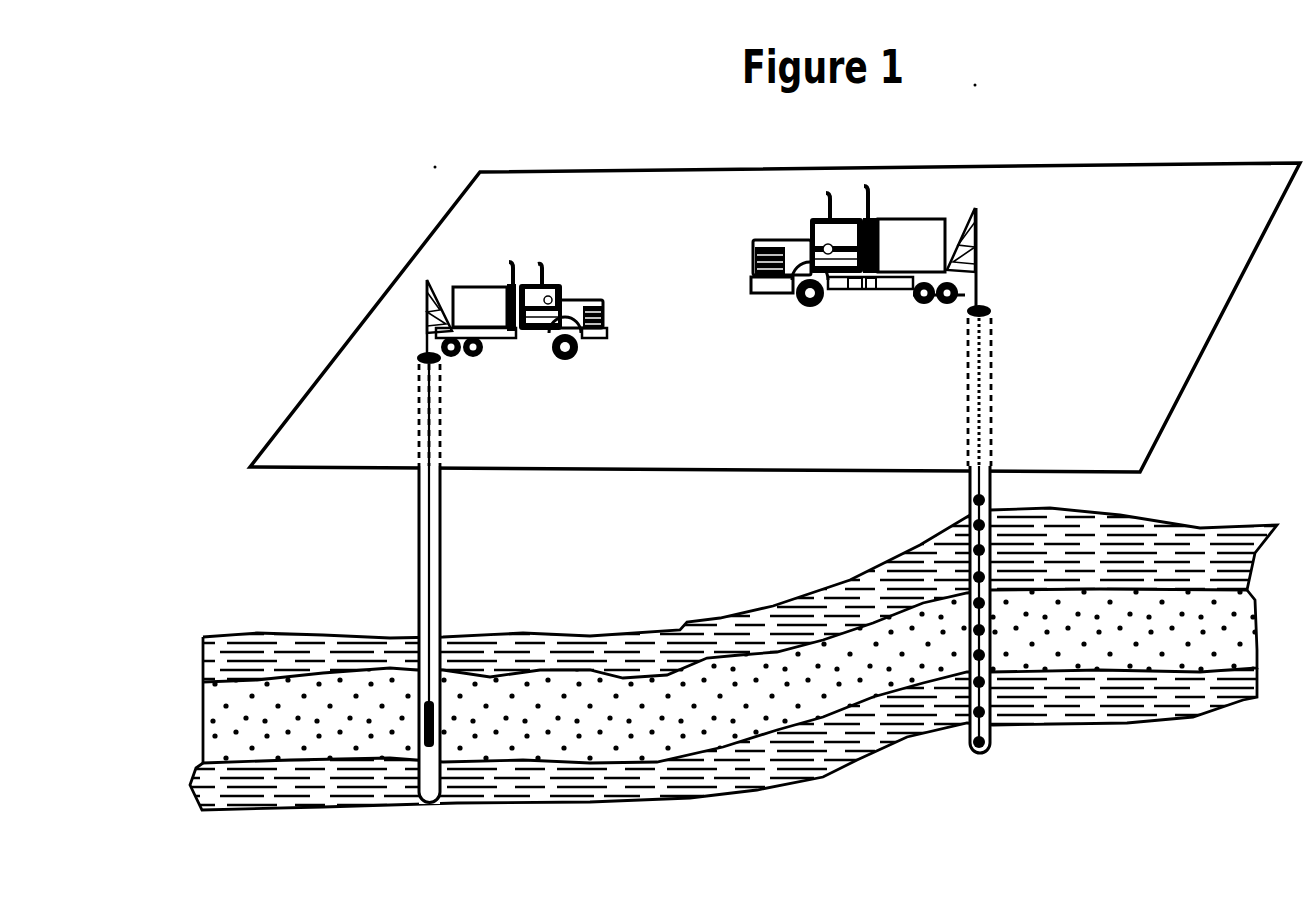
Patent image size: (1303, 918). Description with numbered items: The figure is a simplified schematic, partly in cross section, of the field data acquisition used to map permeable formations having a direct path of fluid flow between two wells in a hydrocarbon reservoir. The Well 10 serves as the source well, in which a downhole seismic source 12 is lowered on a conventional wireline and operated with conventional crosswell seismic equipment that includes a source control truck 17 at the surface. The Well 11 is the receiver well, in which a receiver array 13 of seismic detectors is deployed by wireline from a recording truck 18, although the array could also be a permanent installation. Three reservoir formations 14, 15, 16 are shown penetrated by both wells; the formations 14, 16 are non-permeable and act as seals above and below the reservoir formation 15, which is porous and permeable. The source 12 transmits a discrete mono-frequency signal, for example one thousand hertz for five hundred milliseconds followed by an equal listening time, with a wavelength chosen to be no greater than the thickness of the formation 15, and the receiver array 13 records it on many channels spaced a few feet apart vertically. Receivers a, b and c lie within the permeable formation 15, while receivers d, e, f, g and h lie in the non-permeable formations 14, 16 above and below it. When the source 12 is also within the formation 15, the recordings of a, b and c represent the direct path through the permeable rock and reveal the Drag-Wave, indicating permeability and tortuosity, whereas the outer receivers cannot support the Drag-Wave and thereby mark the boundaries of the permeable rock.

The source well 10 is at (450, 578).
The receiver well 11 is at (957, 529).
The downhole seismic source 12 is at (437, 745).
The receiver array 13 is at (967, 512).
The non-permeable reservoir formation 14 is at (723, 739).
The permeable reservoir formation 15 is at (730, 676).
The non-permeable reservoir formation 16 is at (740, 595).
The source control truck 17 is at (517, 297).
The recording truck 18 is at (863, 239).